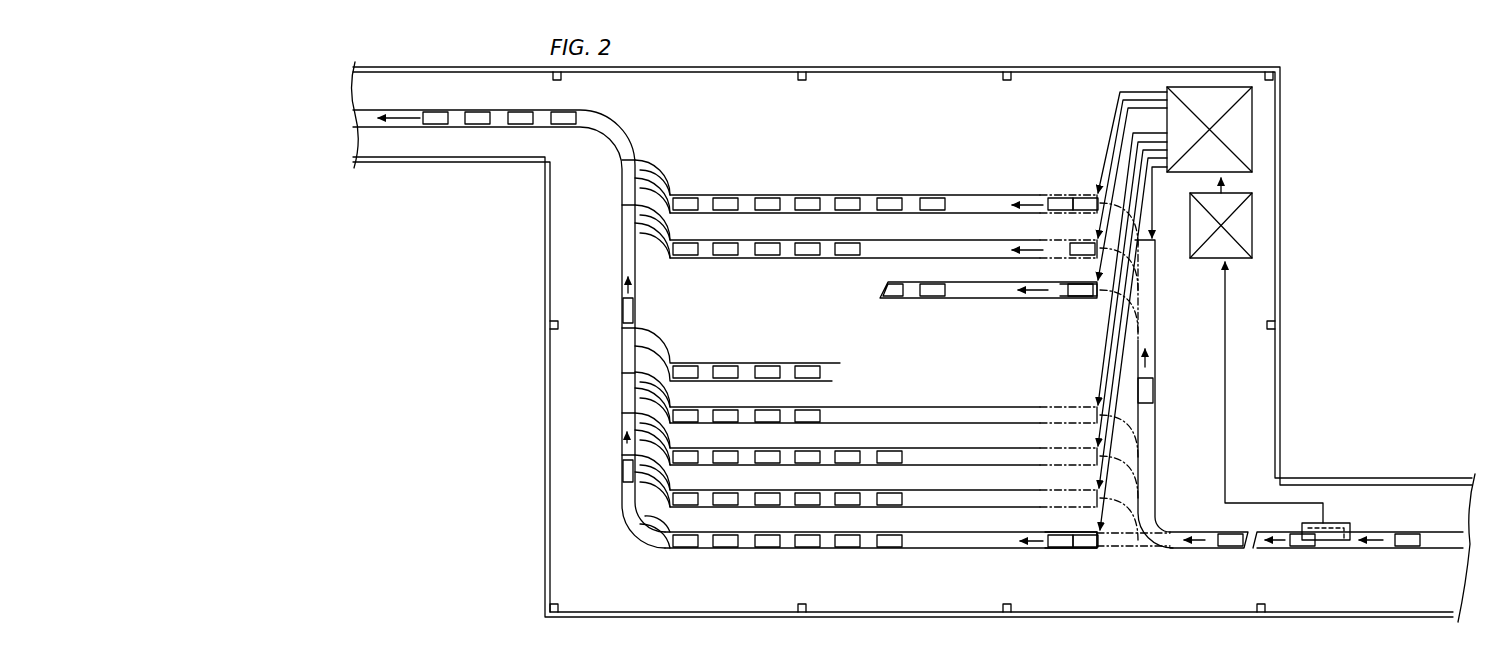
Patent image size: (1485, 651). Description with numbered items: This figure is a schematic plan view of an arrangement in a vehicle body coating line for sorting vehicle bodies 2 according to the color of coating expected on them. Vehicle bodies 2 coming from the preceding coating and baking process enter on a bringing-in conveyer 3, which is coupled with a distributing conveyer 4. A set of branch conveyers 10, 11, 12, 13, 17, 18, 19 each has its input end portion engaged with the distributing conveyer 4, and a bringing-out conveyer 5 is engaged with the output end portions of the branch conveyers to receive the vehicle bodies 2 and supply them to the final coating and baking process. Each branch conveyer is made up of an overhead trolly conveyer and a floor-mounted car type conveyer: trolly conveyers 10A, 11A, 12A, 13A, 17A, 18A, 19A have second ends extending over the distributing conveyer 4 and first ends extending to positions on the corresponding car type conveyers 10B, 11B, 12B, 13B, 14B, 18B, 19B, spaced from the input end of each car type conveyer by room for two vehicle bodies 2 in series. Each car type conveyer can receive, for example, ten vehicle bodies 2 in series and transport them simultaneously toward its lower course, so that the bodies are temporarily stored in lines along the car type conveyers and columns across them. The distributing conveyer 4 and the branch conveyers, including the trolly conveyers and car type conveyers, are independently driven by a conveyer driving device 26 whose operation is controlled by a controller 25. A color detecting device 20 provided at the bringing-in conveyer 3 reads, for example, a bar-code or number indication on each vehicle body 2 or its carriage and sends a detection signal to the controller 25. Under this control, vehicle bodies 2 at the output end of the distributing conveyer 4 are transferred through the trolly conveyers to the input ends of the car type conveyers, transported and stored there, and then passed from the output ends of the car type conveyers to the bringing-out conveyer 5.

The vehicle bodies 2 is at (770, 200).
The bringing-in conveyer 3 is at (1440, 550).
The distributing conveyer 4 is at (1155, 390).
The bringing-out conveyer 5 is at (618, 269).
The branch conveyer 10 is at (948, 551).
The trolly conveyer 10A is at (1045, 549).
The car type conveyer 10B is at (713, 548).
The branch conveyer 11 is at (957, 509).
The trolly conveyer 11A is at (1045, 508).
The car type conveyer 11B is at (708, 507).
The branch conveyer 12 is at (957, 467).
The trolly conveyer 12A is at (1045, 466).
The car type conveyer 12B is at (705, 465).
The branch conveyer 13 is at (957, 425).
The trolly conveyer 13A is at (1045, 424).
The car type conveyer 13B is at (705, 423).
The car type conveyer 14B is at (705, 382).
The branch conveyer 17 is at (957, 300).
The trolly conveyer 17A is at (1040, 300).
The branch conveyer 18 is at (945, 260).
The trolly conveyer 18A is at (1045, 259).
The car type conveyer 18B is at (708, 259).
The branch conveyer 19 is at (955, 216).
The trolly conveyer 19A is at (1040, 215).
The car type conveyer 19B is at (705, 214).
The color detecting device 20 is at (1345, 521).
The controller 25 is at (1245, 260).
The conveyer driving device 26 is at (1182, 173).